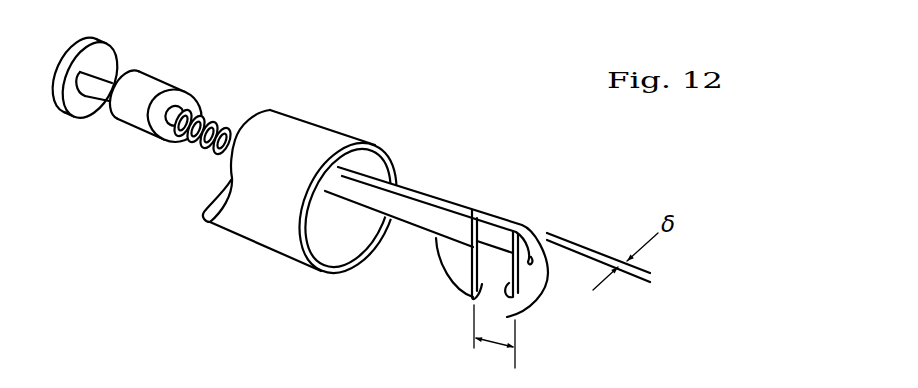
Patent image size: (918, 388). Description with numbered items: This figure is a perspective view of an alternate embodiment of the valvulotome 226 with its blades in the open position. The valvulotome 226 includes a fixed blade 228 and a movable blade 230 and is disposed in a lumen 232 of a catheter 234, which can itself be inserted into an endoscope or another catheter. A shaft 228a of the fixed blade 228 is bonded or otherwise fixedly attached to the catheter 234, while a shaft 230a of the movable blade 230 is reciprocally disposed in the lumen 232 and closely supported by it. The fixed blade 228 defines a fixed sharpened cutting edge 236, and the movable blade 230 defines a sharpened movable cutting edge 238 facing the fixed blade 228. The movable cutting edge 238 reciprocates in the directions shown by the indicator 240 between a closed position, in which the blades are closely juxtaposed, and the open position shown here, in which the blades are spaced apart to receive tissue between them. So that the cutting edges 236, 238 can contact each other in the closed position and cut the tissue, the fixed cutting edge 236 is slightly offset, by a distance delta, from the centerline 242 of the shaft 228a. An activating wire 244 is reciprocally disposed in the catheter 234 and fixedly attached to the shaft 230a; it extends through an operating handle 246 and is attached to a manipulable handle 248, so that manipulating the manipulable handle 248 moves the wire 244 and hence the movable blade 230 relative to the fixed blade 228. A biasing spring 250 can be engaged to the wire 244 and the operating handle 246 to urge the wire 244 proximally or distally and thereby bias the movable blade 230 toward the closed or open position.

The valvulotome 226 is at (492, 184).
The fixed blade 228 is at (457, 239).
The shaft of the fixed blade 228a is at (413, 180).
The movable blade 230 is at (455, 275).
The shaft of the movable blade 230a is at (413, 223).
The lumen 232 is at (310, 232).
The catheter 234 is at (309, 186).
The fixed sharpened cutting edge 236 is at (517, 312).
The movable cutting edge 238 is at (477, 297).
The indicator 240 is at (491, 347).
The centerline 242 is at (650, 272).
The activating wire 244 is at (182, 128).
The operating handle 246 is at (167, 73).
The manipulable handle 248 is at (97, 43).
The biasing spring 250 is at (220, 117).